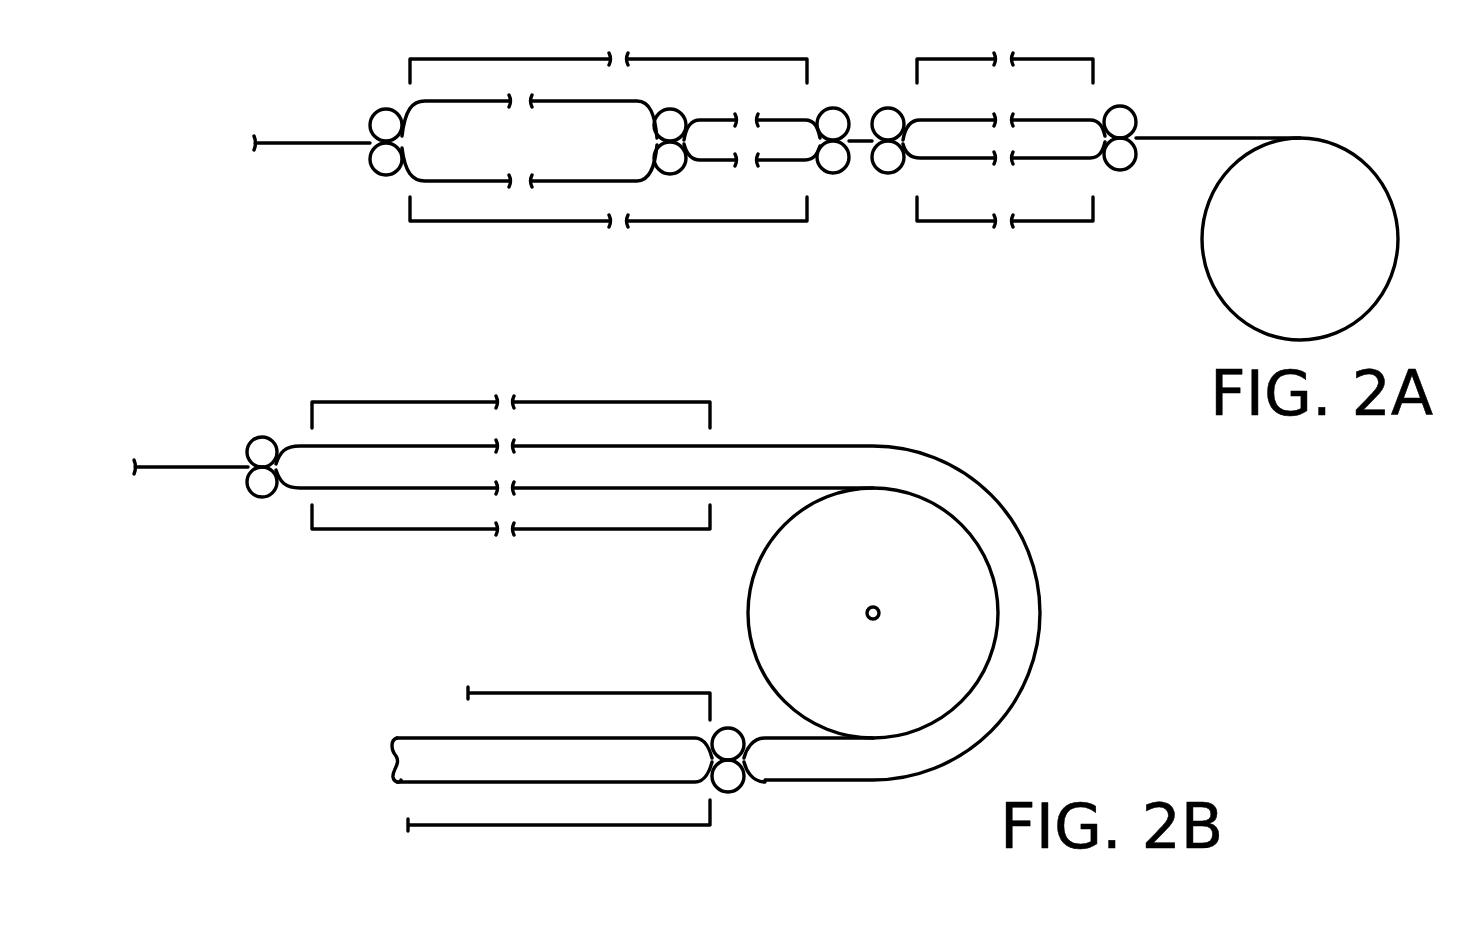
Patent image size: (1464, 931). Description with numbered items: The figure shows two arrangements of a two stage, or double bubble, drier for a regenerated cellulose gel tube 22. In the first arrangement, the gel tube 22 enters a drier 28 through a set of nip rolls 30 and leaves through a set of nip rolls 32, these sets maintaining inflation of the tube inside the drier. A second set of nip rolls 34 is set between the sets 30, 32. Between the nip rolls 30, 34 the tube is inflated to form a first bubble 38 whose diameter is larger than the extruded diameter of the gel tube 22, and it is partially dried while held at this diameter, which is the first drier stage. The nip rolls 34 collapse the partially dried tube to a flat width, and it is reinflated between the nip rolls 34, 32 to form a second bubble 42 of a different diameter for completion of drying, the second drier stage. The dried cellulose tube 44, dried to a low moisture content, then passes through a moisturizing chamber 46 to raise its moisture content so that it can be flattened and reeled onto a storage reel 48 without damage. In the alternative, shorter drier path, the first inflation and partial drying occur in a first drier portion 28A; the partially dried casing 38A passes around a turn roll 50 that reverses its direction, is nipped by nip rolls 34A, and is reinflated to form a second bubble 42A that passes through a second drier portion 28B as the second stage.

In FIG. 2A, the gel tube 22 is at (318, 140).
In FIG. 2B, the gel tube 22 is at (193, 465).
In FIG. 2A, the nip rolls 30 is at (387, 108).
In FIG. 2B, the nip rolls 30 is at (262, 497).
In FIG. 2A, the drier 28 is at (584, 58).
In FIG. 2A, the first bubble 38 is at (585, 183).
In FIG. 2A, the second set of nip rolls 34 is at (672, 108).
In FIG. 2A, the second bubble 42 is at (718, 162).
In FIG. 2A, the nip rolls 32 is at (834, 108).
In FIG. 2A, the dried cellulose tube 44 is at (862, 143).
In FIG. 2A, the moisturizing chamber 46 is at (1028, 58).
In FIG. 2A, the storage reel 48 is at (1203, 245).
In FIG. 2B, the first drier portion 28A is at (395, 400).
In FIG. 2B, the partially dried casing 38A is at (846, 445).
In FIG. 2B, the turn roll 50 is at (750, 612).
In FIG. 2B, the second bubble 42A is at (434, 738).
In FIG. 2B, the nip rolls 34A is at (745, 792).
In FIG. 2B, the second drier portion 28B is at (572, 826).